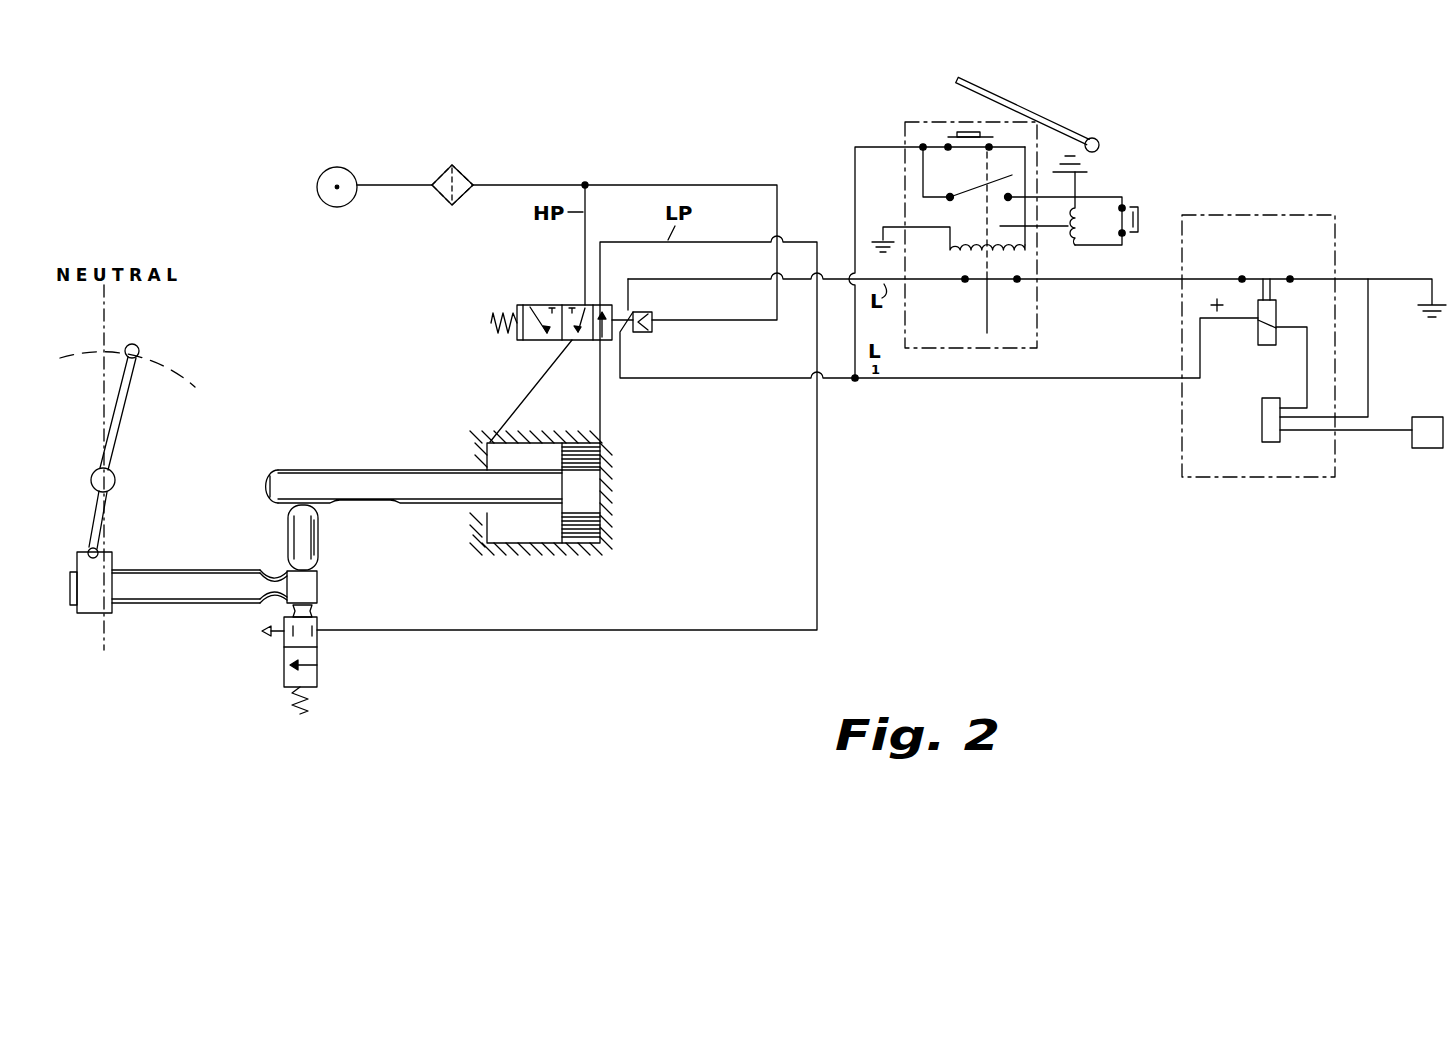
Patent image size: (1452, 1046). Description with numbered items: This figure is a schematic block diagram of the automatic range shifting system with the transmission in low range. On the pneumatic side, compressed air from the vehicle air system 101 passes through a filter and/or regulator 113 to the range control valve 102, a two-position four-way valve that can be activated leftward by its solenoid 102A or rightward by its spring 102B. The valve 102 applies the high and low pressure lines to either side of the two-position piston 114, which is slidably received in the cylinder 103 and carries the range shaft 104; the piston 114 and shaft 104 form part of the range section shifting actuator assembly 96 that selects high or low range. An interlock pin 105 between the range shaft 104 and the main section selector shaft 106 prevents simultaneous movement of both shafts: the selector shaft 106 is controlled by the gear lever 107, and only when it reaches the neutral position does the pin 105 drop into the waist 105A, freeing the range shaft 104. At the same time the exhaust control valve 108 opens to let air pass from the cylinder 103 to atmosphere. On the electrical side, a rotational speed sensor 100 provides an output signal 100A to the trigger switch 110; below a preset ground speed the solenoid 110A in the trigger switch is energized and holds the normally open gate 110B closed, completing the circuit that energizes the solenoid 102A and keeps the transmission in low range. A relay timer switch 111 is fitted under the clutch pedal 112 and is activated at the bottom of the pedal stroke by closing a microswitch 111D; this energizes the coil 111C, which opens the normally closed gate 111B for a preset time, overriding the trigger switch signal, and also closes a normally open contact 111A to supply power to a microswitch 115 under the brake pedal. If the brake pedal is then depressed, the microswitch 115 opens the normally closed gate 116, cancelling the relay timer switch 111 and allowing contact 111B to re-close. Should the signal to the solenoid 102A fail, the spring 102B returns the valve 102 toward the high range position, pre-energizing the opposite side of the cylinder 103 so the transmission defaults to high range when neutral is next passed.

The range section shifting actuator assembly 96 is at (617, 503).
The rotational speed sensor 100 is at (1432, 448).
The output signal 100A is at (1362, 432).
The vehicle air system 101 is at (345, 168).
The range control valve 102 is at (530, 305).
The solenoid 102A is at (641, 334).
The spring 102B is at (493, 315).
The cylinder 103 is at (548, 545).
The range shaft 104 is at (383, 468).
The interlock pin 105 is at (320, 538).
The waist 105A is at (273, 578).
The selector shaft 106 is at (207, 605).
The gear lever 107 is at (139, 348).
The exhaust control valve 108 is at (322, 676).
The trigger switch 110 is at (1264, 377).
The solenoid 110A is at (1271, 348).
The normally open gate 110B is at (1271, 279).
The relay timer switch 111 is at (997, 240).
The normally open contact 111A is at (970, 182).
The normally closed gate 111B is at (952, 314).
The coil 111C is at (942, 216).
The microswitch 111D is at (962, 130).
The clutch pedal 112 is at (1003, 100).
The filter and/or regulator 113 is at (458, 166).
The piston 114 is at (588, 482).
The microswitch 115 is at (1142, 200).
The normally closed gate 116 is at (1028, 232).